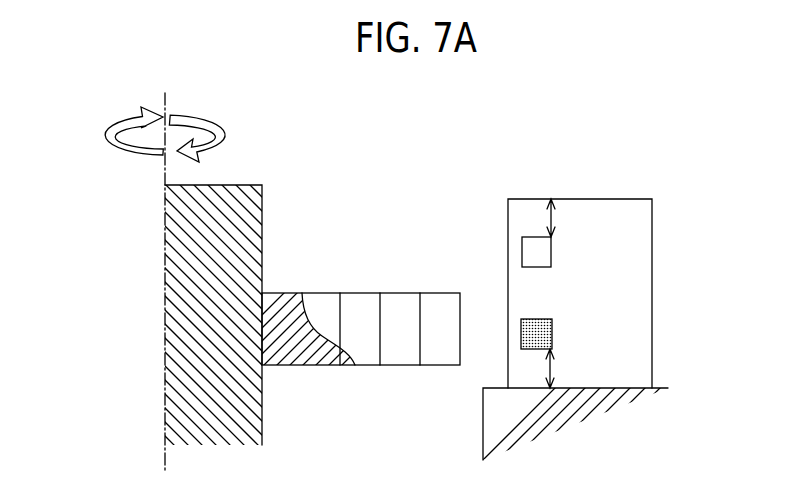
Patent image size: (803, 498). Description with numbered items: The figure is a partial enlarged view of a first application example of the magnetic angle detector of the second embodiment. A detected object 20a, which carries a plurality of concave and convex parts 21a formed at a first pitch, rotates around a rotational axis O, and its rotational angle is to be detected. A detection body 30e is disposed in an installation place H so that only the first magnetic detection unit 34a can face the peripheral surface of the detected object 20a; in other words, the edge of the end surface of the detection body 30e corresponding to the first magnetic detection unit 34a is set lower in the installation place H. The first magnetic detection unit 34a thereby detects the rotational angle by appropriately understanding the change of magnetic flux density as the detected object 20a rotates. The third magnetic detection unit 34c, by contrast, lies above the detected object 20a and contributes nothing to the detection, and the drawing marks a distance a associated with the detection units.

The rotational axis O is at (162, 108).
The detected object 20a is at (280, 300).
The concave and convex parts 21a is at (405, 308).
The detection body 30e is at (642, 199).
The third magnetic detection unit 34c is at (551, 253).
The first magnetic detection unit 34a is at (552, 332).
The distance a is at (537, 293).
The installation place H is at (498, 387).